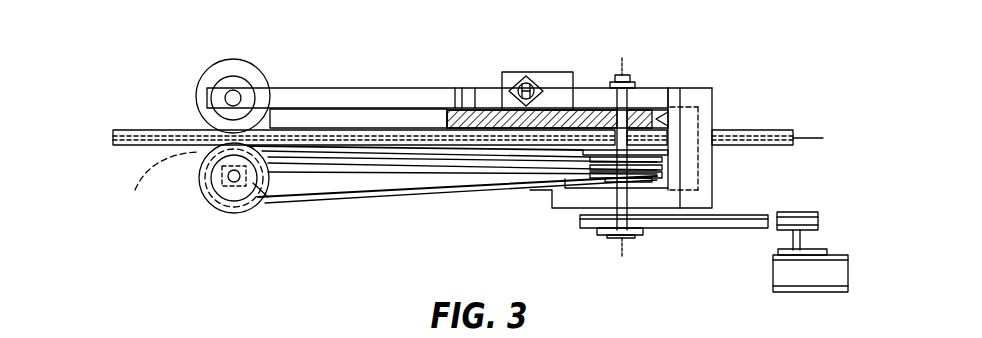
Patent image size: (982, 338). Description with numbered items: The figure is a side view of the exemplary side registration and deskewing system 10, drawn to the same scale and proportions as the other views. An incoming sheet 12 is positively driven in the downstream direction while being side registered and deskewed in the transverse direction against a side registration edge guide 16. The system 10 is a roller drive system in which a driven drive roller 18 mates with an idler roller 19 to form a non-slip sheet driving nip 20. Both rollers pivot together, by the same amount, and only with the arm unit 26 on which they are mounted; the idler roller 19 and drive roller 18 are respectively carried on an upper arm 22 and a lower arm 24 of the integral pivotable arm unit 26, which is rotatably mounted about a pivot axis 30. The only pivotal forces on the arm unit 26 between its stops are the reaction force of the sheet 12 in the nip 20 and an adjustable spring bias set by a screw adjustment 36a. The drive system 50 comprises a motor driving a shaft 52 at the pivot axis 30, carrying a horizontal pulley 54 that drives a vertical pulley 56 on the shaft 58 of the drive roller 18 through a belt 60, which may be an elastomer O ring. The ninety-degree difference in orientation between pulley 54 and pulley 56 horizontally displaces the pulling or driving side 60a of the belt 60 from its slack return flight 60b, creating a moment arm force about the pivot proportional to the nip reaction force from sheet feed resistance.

The side registration and deskewing system 10 is at (455, 243).
The incoming sheet 12 is at (82, 137).
The side registration edge guide 16 is at (738, 128).
The drive roller 18 is at (203, 188).
The idler roller 19 is at (217, 70).
The sheet driving nip 20 is at (156, 187).
The upper arm 22 is at (404, 88).
The lower arm 24 is at (320, 177).
The arm unit 26 is at (717, 78).
The pivot axis 30 is at (633, 68).
The screw adjustment 36a is at (527, 85).
The drive system 50 is at (552, 228).
The shaft 52 is at (625, 235).
The horizontal pulley 54 is at (650, 180).
The vertical pulley 56 is at (228, 208).
The shaft of the drive roller 58 is at (252, 203).
The belt 60 is at (332, 198).
The driving side of belt 60a is at (382, 187).
The return flight of belt 60b is at (405, 162).